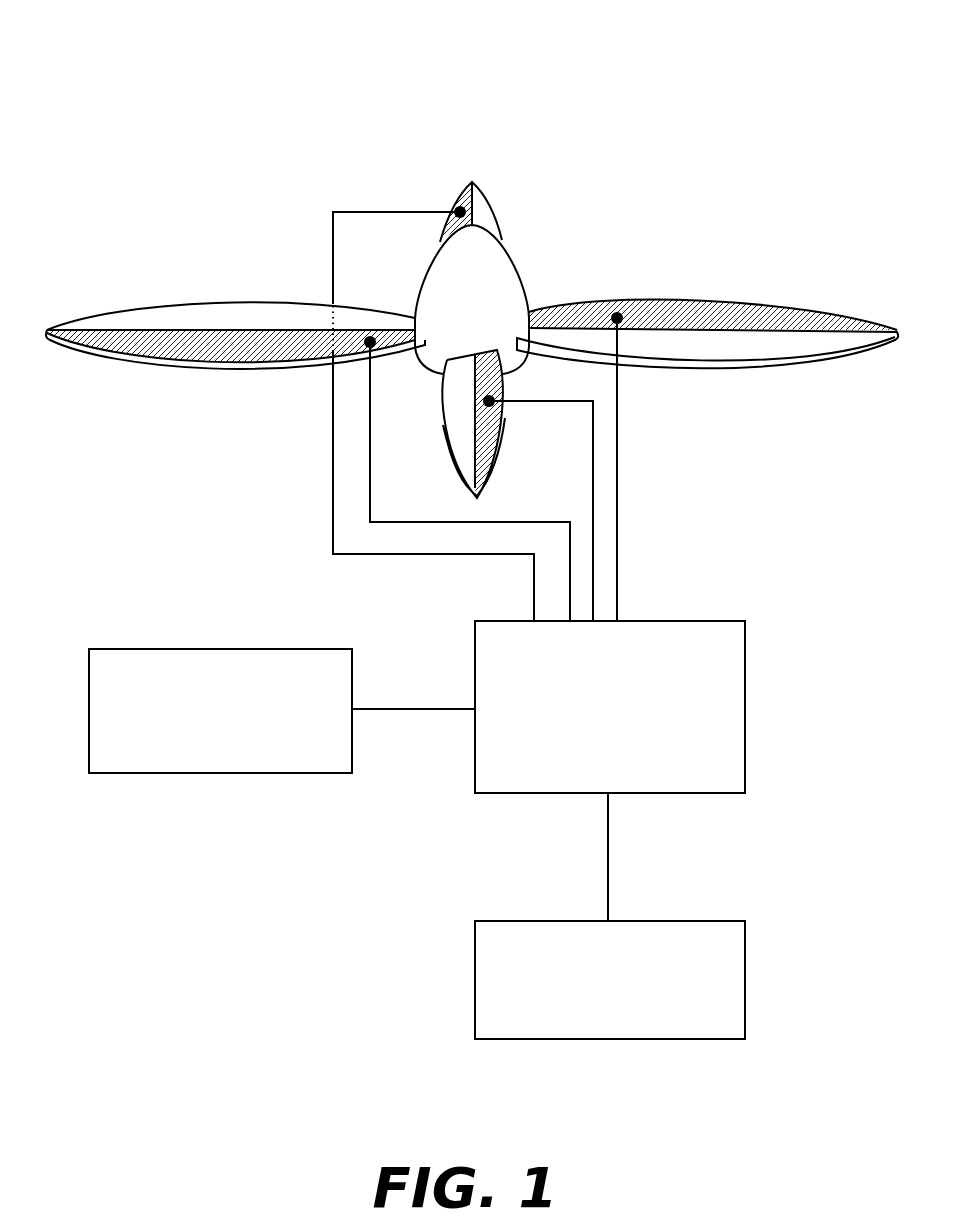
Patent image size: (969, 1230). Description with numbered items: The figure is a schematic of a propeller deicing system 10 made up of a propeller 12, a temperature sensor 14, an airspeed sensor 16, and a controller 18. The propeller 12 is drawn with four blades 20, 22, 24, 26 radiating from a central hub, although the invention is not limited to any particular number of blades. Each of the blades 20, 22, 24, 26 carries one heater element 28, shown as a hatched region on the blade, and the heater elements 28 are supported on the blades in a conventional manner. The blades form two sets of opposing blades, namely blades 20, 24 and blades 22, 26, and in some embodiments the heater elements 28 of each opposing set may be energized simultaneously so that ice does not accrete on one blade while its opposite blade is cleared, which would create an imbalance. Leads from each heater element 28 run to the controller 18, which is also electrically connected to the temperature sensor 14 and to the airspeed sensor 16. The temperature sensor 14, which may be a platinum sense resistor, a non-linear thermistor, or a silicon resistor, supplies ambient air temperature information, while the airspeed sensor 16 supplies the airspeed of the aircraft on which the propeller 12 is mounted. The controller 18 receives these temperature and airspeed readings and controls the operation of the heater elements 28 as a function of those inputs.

The propeller deicing system 10 is at (688, 112).
The propeller 12 is at (122, 377).
The temperature sensor 14 is at (185, 760).
The airspeed sensor 16 is at (643, 1022).
The controller 18 is at (662, 772).
The propeller blade 20 is at (488, 217).
The propeller blade 22 is at (702, 350).
The propeller blade 24 is at (455, 417).
The propeller blade 26 is at (248, 313).
The heater element 28 is at (463, 198).